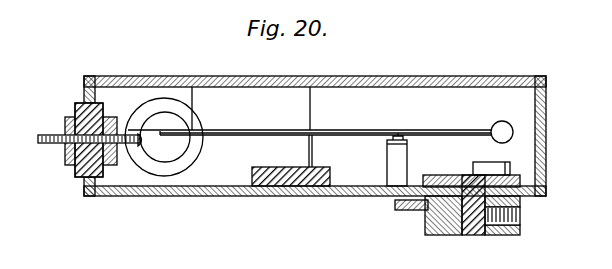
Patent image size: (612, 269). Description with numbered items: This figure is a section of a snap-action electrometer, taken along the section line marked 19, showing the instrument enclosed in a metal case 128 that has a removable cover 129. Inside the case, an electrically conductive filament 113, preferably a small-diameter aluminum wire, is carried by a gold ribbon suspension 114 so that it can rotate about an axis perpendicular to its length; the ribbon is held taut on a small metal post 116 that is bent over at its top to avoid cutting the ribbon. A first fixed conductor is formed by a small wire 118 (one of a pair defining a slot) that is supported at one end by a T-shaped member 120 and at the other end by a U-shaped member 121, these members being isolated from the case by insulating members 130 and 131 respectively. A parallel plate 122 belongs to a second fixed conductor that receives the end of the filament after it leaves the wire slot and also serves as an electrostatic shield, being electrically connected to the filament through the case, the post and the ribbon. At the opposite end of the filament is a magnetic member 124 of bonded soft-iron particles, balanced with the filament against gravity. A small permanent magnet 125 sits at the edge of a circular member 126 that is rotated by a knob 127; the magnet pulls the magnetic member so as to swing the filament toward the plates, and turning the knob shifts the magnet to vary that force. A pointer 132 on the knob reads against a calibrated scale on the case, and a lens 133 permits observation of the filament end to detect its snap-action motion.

The section line 19 is at (2, 136).
The electrically conductive filament 113 is at (353, 131).
The gold ribbon suspension 114 is at (402, 137).
The post 116 is at (390, 167).
The small wire 118 is at (153, 131).
The T-shaped member 120 is at (120, 133).
The U-shaped member 121 is at (303, 149).
The parallel plate 122 is at (265, 102).
The magnetic member 124 is at (500, 131).
The permanent magnet 125 is at (490, 166).
The circular member 126 is at (520, 178).
The knob 127 is at (521, 228).
The metal case 128 is at (213, 196).
The removable cover 129 is at (455, 70).
The insulating member 130 is at (80, 103).
The insulating member 131 is at (303, 187).
The pointer 132 is at (403, 211).
The lens 133 is at (168, 122).